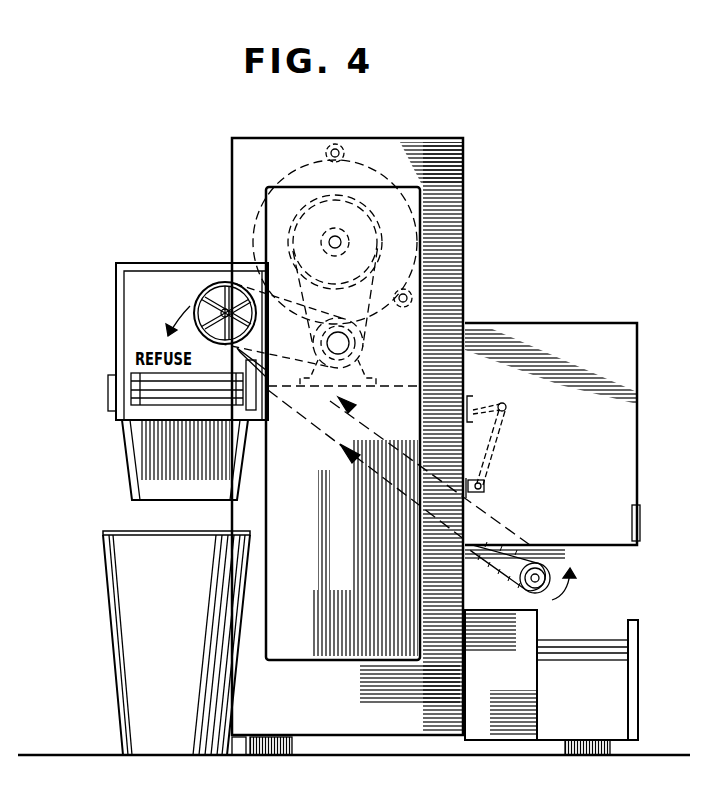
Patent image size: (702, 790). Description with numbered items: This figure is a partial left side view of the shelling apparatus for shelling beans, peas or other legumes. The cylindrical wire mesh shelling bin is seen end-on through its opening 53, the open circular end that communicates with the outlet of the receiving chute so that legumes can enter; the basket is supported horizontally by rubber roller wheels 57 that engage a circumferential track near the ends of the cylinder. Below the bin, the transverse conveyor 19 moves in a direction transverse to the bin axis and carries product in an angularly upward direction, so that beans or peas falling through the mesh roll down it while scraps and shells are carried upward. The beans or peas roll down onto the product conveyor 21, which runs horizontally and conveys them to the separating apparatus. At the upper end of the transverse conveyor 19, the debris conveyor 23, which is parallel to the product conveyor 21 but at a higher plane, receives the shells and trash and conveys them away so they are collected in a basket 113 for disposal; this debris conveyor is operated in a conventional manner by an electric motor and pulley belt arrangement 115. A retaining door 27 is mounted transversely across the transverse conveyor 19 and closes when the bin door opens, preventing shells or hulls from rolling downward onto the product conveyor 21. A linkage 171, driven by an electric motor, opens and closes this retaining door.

The transverse conveyor 19 is at (392, 480).
The product conveyor 21 is at (580, 655).
The debris conveyor 23 is at (147, 392).
The retaining door 27 is at (486, 480).
The opening of the shelling bin 53 is at (362, 170).
The rubber roller wheels 57 is at (326, 152).
The basket 113 is at (155, 628).
The electric motor and pulley belt arrangement 115 is at (202, 300).
The linkage 171 is at (505, 420).